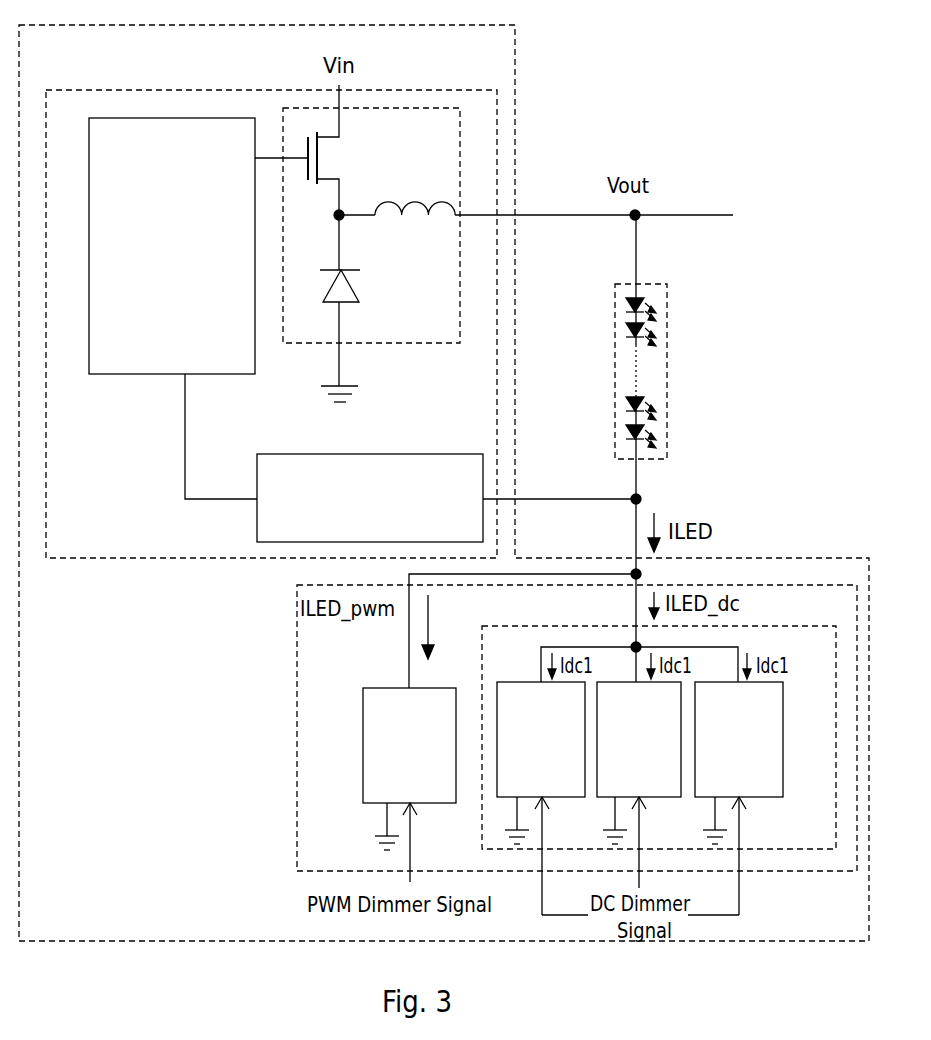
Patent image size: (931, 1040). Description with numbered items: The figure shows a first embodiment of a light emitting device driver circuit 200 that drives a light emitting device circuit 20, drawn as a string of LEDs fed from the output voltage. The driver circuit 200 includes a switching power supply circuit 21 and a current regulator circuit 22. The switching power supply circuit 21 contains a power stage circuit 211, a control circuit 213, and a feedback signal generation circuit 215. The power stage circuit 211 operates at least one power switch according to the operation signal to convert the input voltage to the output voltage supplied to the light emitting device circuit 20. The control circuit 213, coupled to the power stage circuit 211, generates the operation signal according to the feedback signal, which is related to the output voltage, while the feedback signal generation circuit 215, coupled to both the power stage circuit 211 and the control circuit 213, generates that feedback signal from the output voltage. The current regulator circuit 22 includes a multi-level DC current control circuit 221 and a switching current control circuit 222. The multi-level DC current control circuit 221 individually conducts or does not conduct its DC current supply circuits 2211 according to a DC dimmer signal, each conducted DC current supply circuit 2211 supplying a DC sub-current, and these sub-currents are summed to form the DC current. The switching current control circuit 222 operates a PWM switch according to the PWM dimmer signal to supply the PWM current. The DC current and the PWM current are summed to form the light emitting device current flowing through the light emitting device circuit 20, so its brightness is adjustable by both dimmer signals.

The light emitting device driver circuit 200 is at (78, 66).
The switching power supply circuit 21 is at (95, 549).
The power stage circuit 211 is at (444, 144).
The control circuit 213 is at (133, 150).
The feedback signal generation circuit 215 is at (422, 454).
The light emitting device circuit 20 is at (670, 313).
The current regulator circuit 22 is at (328, 870).
The multi-level DC current control circuit 221 is at (830, 654).
The DC current supply circuit 2211 is at (560, 752).
The switching current control circuit 222 is at (429, 752).